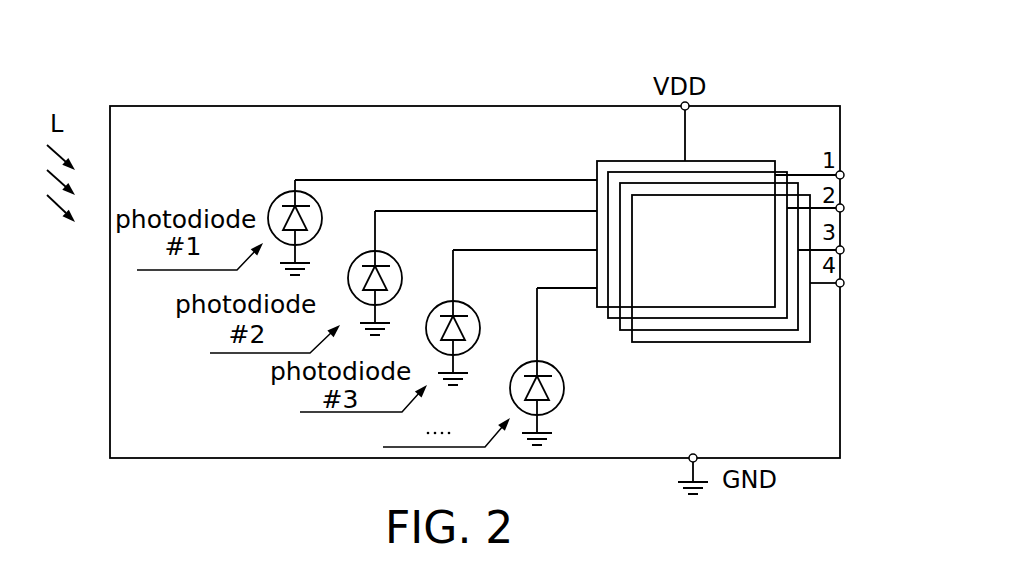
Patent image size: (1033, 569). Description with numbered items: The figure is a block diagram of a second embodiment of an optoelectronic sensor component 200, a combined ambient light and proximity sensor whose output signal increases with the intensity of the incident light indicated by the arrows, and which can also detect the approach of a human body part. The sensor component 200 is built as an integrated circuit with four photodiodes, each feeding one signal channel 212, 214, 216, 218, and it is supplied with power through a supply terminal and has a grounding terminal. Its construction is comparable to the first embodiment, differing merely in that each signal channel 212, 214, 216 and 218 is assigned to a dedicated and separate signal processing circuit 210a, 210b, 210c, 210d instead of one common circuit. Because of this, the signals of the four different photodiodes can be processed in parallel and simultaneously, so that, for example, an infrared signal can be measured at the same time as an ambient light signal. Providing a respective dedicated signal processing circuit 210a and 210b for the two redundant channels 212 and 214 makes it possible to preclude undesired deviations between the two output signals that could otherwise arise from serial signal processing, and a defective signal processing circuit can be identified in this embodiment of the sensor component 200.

The sensor component 200 is at (422, 88).
The signal channel 212 is at (358, 179).
The signal channel 214 is at (483, 210).
The signal channel 216 is at (557, 249).
The signal channel 218 is at (540, 332).
The signal processing circuit 210a is at (630, 161).
The signal processing circuit 210b is at (727, 172).
The signal processing circuit 210c is at (792, 183).
The signal processing circuit 210d is at (745, 343).